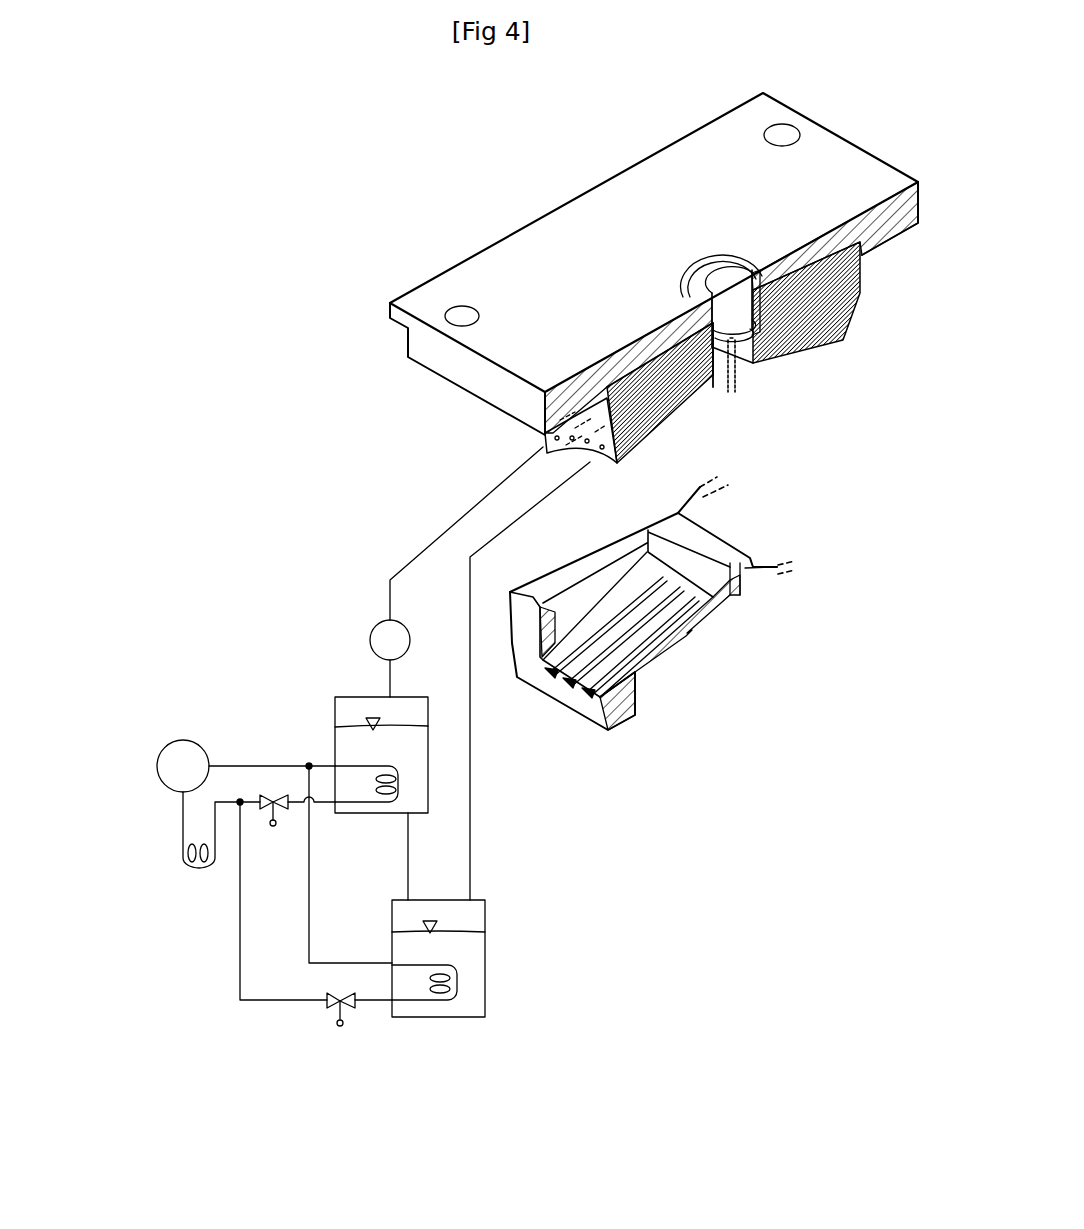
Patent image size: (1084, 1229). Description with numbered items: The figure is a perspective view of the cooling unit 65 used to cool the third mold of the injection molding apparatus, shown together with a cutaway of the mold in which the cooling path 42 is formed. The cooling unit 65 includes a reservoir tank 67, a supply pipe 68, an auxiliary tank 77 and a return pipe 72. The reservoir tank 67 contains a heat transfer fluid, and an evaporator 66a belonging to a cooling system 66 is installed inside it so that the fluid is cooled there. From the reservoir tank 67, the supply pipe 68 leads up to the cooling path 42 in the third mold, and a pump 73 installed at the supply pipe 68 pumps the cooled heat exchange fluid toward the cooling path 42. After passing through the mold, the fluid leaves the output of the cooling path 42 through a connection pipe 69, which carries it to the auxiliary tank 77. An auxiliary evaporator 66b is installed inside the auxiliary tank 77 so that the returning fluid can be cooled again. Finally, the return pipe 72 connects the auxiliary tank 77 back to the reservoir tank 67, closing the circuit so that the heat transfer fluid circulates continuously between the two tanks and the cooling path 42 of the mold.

The cooling path 42 is at (543, 438).
The cooling unit 65 is at (276, 593).
The cooling system 66 is at (148, 738).
The evaporator 66a is at (383, 772).
The auxiliary evaporator 66b is at (447, 990).
The reservoir tank 67 is at (428, 787).
The supply pipe 68 is at (447, 532).
The connection pipe 69 is at (468, 735).
The return pipe 72 is at (408, 860).
The pump 73 is at (377, 625).
The auxiliary tank 77 is at (485, 970).